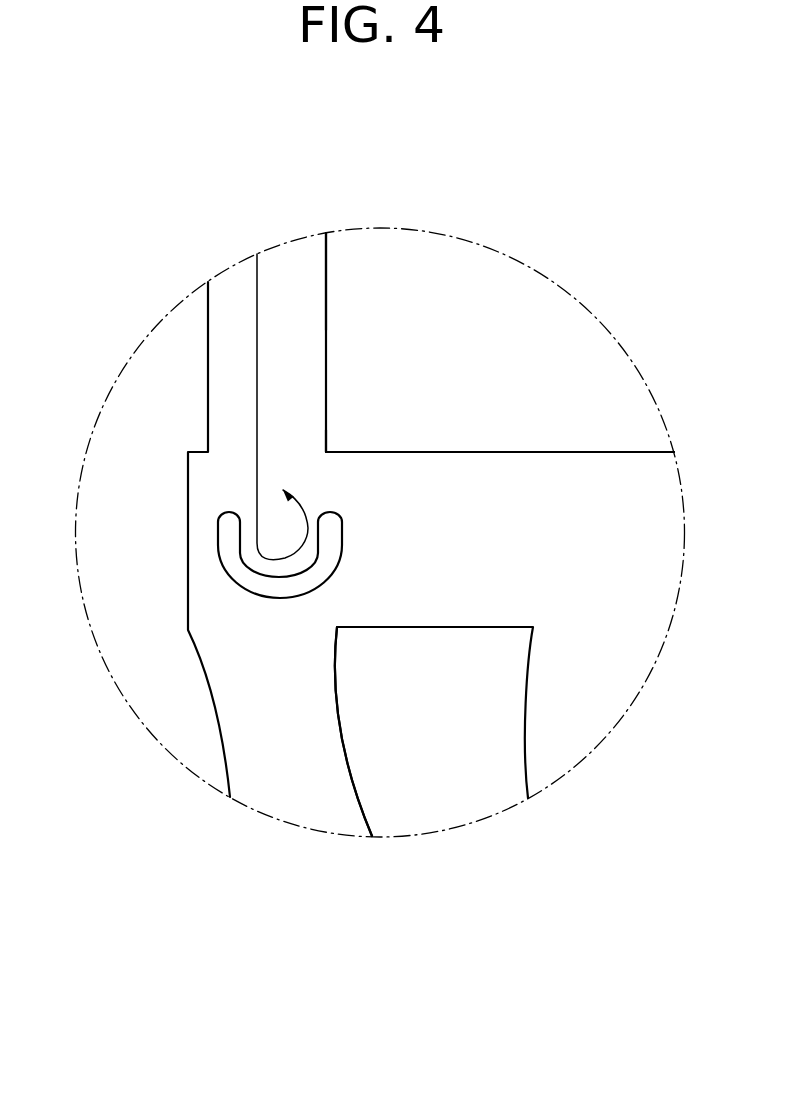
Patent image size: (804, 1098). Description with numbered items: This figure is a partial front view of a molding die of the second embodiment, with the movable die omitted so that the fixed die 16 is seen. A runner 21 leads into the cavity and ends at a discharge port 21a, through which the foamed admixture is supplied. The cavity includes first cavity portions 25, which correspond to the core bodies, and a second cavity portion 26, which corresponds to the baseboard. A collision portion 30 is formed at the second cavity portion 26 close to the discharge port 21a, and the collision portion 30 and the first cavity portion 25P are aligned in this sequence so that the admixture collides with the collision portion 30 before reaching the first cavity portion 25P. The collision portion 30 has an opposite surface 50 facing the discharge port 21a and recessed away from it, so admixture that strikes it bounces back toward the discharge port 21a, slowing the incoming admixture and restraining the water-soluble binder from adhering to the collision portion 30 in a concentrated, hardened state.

The fixed die 16 is at (503, 292).
The runner 21 is at (322, 265).
The discharge port 21a is at (330, 438).
The first cavity portion 25 is at (565, 737).
The first cavity portion 25P is at (298, 798).
The second cavity portion 26 is at (447, 500).
The collision portion 30 is at (282, 585).
The opposite surface 50 is at (295, 572).